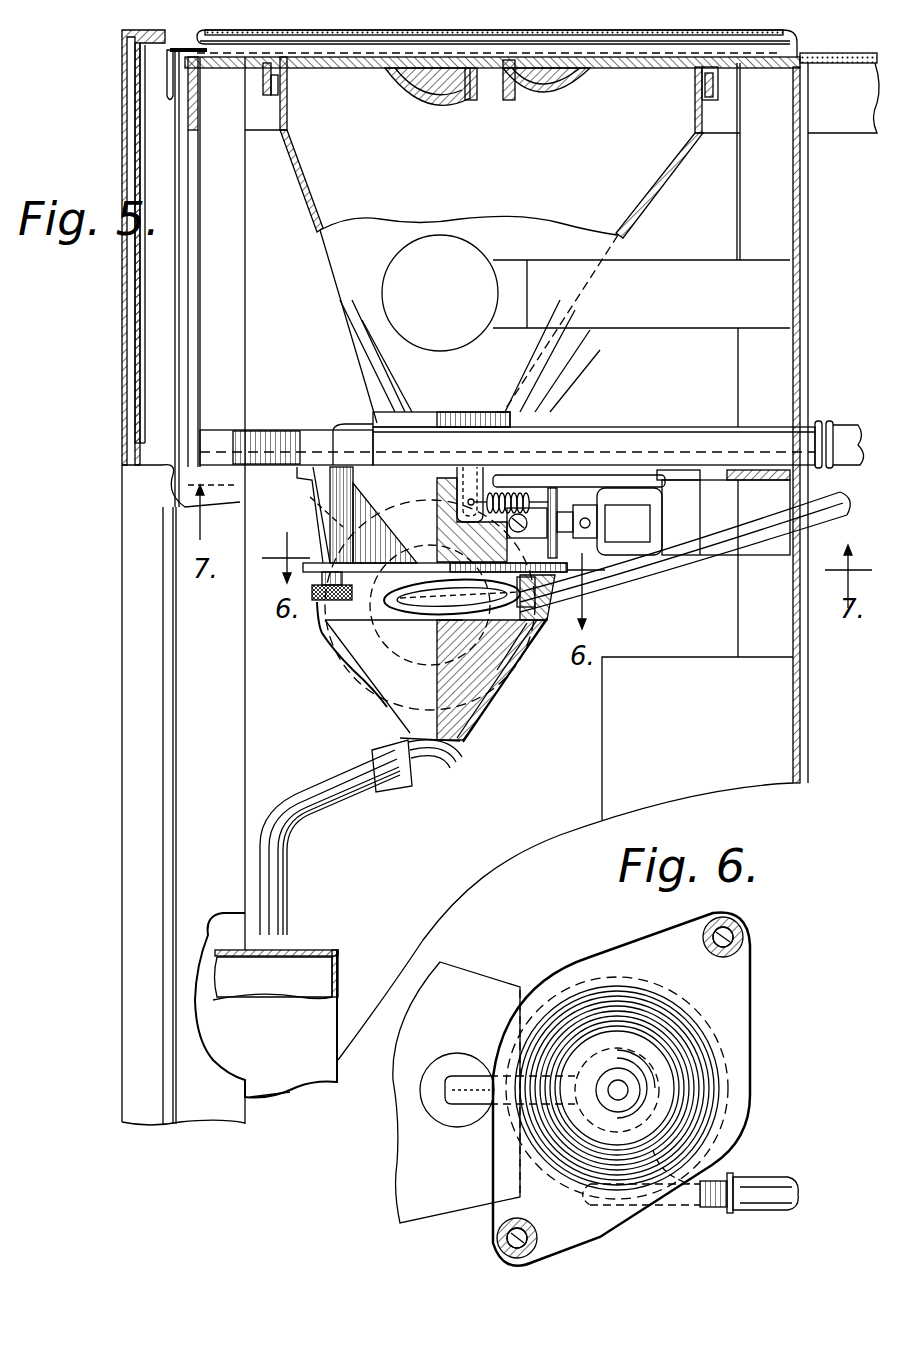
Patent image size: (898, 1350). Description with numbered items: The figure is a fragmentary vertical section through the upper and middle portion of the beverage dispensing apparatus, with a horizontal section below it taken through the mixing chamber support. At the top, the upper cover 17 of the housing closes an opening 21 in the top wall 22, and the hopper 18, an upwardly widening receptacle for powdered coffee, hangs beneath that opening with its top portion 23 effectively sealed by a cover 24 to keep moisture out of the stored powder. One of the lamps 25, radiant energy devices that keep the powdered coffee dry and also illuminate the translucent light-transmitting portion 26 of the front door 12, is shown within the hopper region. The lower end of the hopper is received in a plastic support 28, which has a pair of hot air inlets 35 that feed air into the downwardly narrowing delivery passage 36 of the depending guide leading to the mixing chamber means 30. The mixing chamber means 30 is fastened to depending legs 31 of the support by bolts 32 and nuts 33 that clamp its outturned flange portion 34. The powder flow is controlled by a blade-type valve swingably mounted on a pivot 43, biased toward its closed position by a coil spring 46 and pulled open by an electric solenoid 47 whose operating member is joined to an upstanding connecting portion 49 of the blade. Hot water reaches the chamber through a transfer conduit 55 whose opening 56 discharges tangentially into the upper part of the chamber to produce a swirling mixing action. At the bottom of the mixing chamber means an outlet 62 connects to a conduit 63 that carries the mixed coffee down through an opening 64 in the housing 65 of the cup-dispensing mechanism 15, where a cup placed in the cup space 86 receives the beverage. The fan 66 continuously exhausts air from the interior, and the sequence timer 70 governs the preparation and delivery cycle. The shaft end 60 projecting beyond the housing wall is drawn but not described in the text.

In FIG. 5, the cabinet wall 12 is at (125, 708).
In FIG. 5, the bottom support 15 is at (272, 1097).
In FIG. 5, the top plate 17 is at (790, 30).
In FIG. 5, the hopper 18 is at (647, 195).
In FIG. 5, the hopper clamp 21 is at (258, 70).
In FIG. 5, the latch lever 22 is at (232, 70).
In FIG. 5, the lock piece 23 is at (292, 74).
In FIG. 5, the hopper lid flange 24 is at (418, 95).
In FIG. 5, the agitator bulb 25 is at (470, 238).
In FIG. 5, the wall liner strip 26 is at (135, 397).
In FIG. 5, the hopper outlet edge 28 is at (503, 413).
In FIG. 5, the dispensing funnel 30 is at (487, 700).
In FIG. 5, the mounting bracket / bolt 31 is at (320, 513).
In FIG. 6, the mounting bracket / bolt 31 is at (737, 920).
In FIG. 6, the mounting bolt 32 is at (748, 942).
In FIG. 5, the adjusting nut 33 is at (320, 602).
In FIG. 6, the mounting plate 34 is at (585, 1225).
In FIG. 5, the drive shaft 35 is at (345, 424).
In FIG. 6, the spiral spring 36 is at (697, 1122).
In FIG. 5, the switch housing 43 is at (682, 516).
In FIG. 5, the spring 46 is at (513, 497).
In FIG. 5, the support block 47 is at (687, 520).
In FIG. 5, the link 49 is at (540, 494).
In FIG. 5, the control rod 55 is at (657, 590).
In FIG. 6, the control rod 55 is at (773, 1188).
In FIG. 5, the plunger 56 is at (415, 617).
In FIG. 6, the plunger 56 is at (657, 1175).
In FIG. 5, the shaft end 60 is at (846, 425).
In FIG. 5, the elbow coupling 62 is at (405, 782).
In FIG. 6, the elbow coupling 62 is at (633, 1087).
In FIG. 5, the discharge tube 63 is at (284, 882).
In FIG. 6, the discharge tube 63 is at (463, 1085).
In FIG. 5, the coupling band 64 is at (300, 950).
In FIG. 6, the coupling band 64 is at (430, 1100).
In FIG. 5, the bracket plate 65 is at (342, 968).
In FIG. 6, the bracket plate 65 is at (447, 1198).
In FIG. 5, the wire 66 is at (330, 647).
In FIG. 5, the housing block 70 is at (617, 762).
In FIG. 5, the support casting 86 is at (287, 1047).